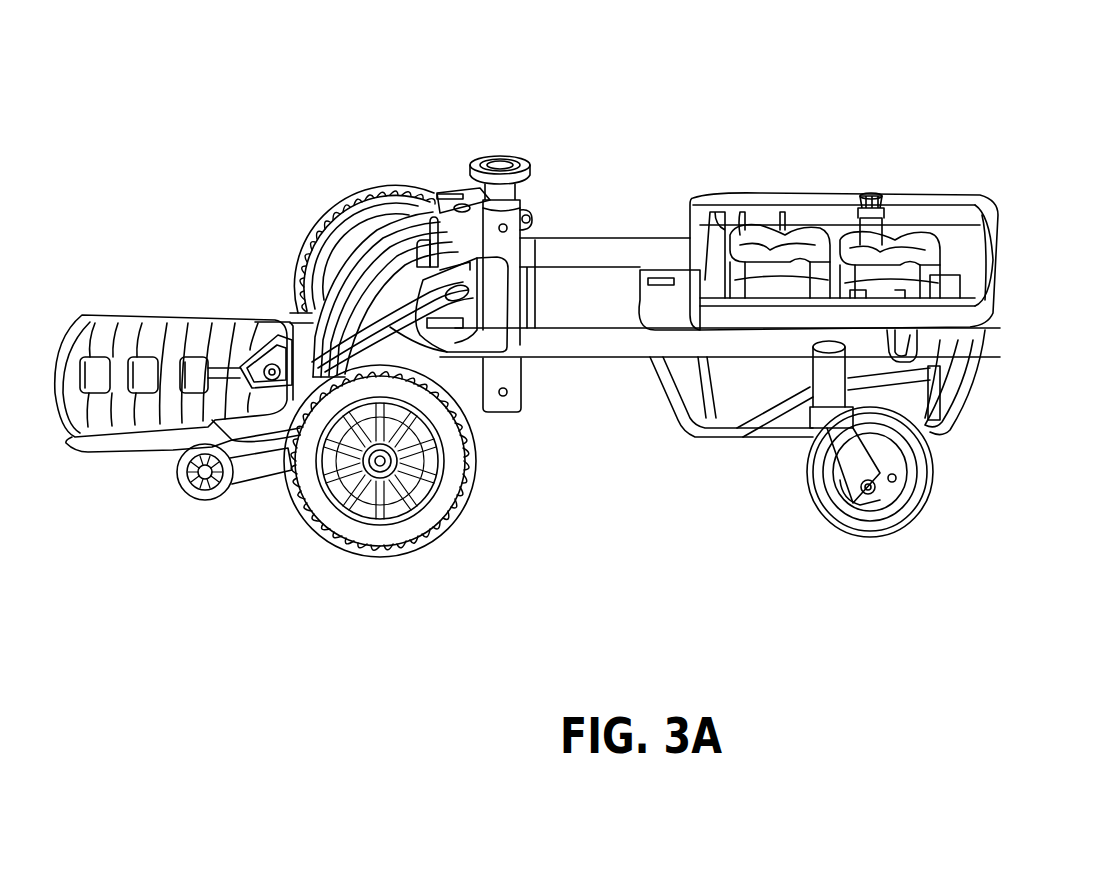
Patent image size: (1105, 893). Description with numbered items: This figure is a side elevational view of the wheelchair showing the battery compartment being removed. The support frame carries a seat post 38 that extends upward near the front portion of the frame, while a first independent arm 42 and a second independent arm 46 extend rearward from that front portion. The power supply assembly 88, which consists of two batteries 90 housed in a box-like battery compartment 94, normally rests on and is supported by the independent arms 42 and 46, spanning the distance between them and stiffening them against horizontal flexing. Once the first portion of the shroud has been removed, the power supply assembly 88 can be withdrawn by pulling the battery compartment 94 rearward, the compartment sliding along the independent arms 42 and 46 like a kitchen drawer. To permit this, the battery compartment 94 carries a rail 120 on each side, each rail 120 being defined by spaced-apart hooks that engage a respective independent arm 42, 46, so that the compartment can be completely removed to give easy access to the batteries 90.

The seat post 38 is at (513, 200).
The first independent arm 42 is at (587, 245).
The second independent arm 46 is at (572, 345).
The power supply assembly 88 is at (897, 150).
The batteries 90 is at (888, 238).
The battery compartment 94 is at (944, 345).
The rail 120 is at (905, 343).